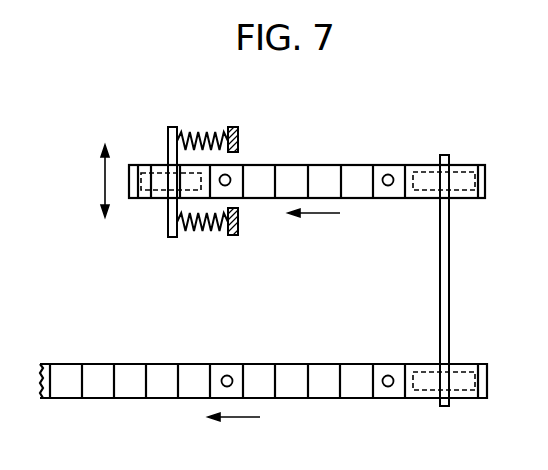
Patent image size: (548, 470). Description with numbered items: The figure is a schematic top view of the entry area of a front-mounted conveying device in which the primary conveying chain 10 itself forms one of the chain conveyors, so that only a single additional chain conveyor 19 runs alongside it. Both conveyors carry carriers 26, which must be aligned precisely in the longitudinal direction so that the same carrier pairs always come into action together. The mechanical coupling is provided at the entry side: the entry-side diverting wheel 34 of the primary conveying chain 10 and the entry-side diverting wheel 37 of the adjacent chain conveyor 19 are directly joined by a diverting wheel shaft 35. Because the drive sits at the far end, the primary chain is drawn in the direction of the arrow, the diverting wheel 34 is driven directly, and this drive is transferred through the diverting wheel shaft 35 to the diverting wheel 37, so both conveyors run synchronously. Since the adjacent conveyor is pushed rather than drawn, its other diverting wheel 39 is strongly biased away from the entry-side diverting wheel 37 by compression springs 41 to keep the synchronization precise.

The primary conveying chain 10 is at (156, 388).
The additional chain conveyor 19 is at (322, 179).
The carriers 26 is at (229, 177).
The entry-side diverting wheel 34 is at (456, 388).
The diverting wheel shaft 35 is at (449, 272).
The entry-side diverting wheel 37 is at (460, 173).
The other diverting wheel 39 is at (158, 170).
The compression springs 41 is at (190, 140).